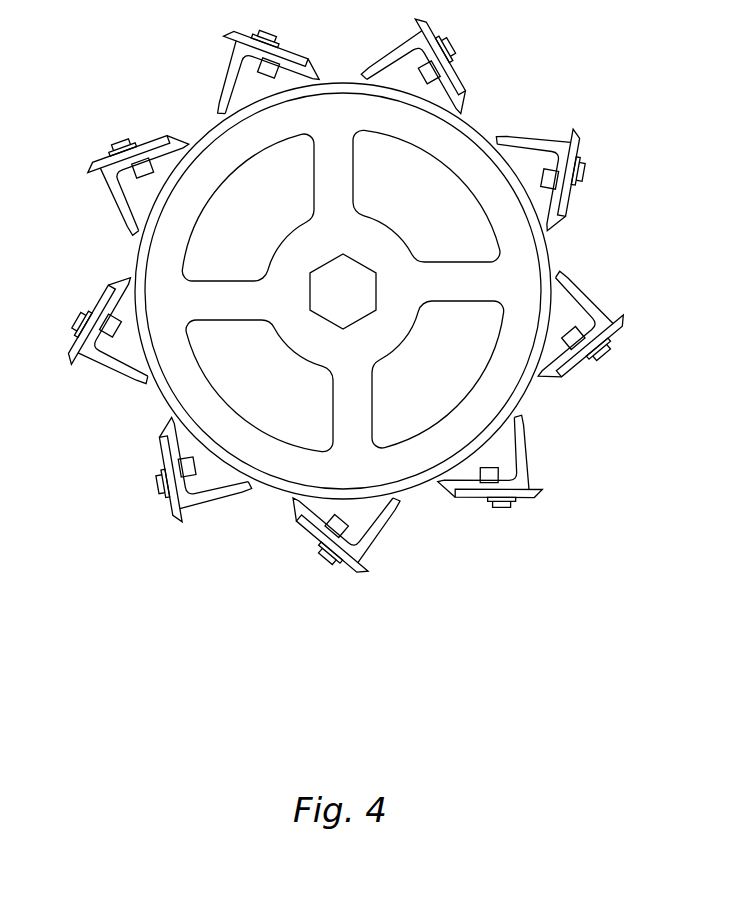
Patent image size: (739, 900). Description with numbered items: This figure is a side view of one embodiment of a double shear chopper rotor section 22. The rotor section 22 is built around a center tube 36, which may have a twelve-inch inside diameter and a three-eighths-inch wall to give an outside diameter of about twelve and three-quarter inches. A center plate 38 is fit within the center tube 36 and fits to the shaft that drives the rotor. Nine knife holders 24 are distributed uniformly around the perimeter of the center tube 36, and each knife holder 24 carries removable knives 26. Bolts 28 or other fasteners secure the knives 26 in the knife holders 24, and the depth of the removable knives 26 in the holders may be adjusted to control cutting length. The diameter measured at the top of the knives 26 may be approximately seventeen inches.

The double shear chopper rotor section 22 is at (344, 291).
The knife holder 24 is at (233, 80).
The removable knife 26 is at (237, 44).
The bolt 28 is at (285, 44).
The center tube 36 is at (142, 258).
The center plate 38 is at (270, 250).